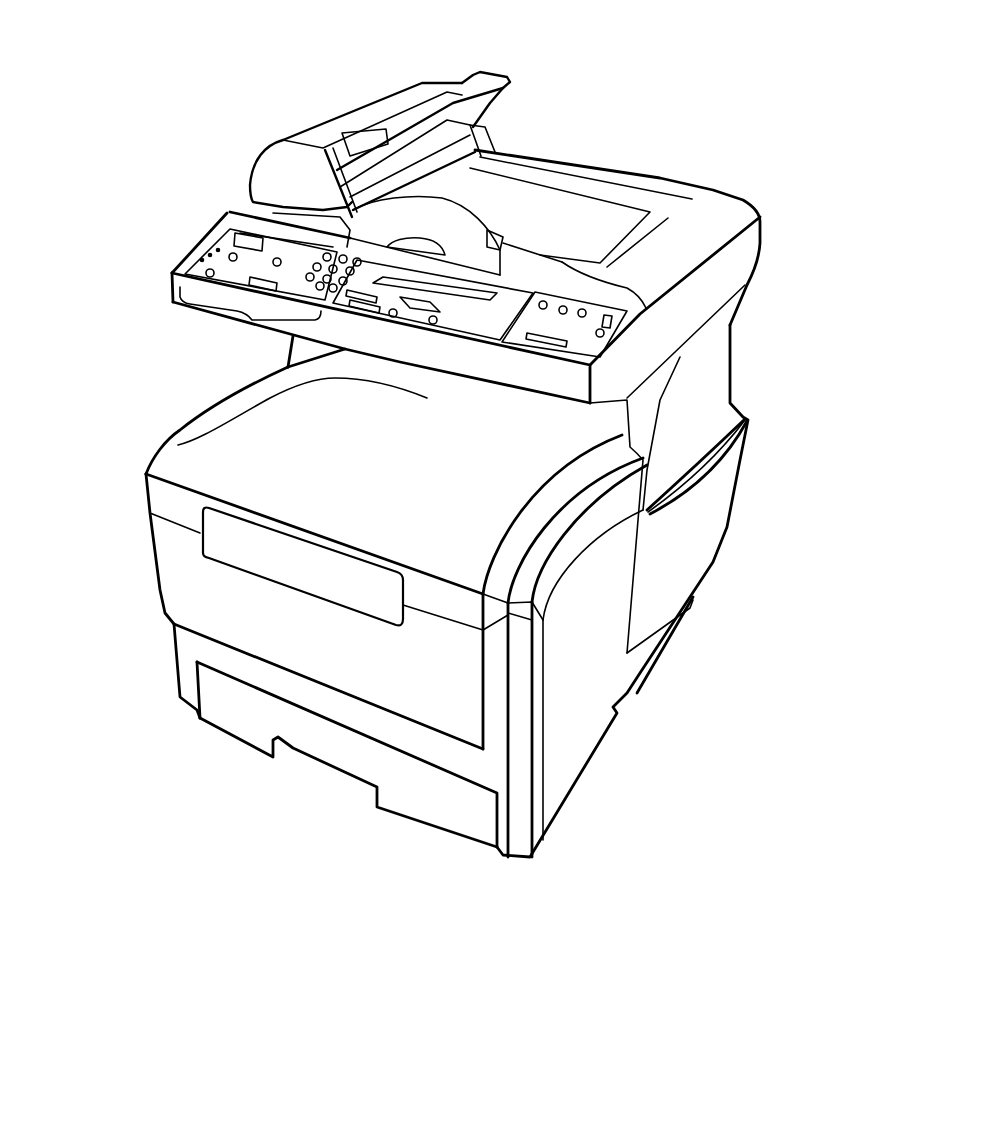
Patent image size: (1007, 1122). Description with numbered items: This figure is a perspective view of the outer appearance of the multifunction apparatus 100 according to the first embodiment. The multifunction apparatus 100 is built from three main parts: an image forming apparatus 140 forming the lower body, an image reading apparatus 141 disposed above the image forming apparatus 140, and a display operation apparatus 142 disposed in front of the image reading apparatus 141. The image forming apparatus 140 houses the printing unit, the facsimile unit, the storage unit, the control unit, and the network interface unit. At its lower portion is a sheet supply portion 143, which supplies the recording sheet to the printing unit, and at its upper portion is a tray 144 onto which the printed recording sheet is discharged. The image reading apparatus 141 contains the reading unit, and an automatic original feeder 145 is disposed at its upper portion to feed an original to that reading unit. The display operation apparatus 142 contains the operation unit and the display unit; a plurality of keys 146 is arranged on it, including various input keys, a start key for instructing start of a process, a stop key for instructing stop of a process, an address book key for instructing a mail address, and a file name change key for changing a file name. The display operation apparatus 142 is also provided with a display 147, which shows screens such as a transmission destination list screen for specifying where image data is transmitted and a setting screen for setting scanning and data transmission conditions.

The multifunction apparatus 100 is at (683, 57).
The image forming apparatus 140 is at (590, 633).
The image reading apparatus 141 is at (540, 160).
The display operation apparatus 142 is at (205, 240).
The sheet supply portion 143 is at (413, 797).
The tray 144 is at (167, 447).
The automatic original feeder 145 is at (380, 100).
The keys 146 is at (247, 313).
The display 147 is at (617, 327).